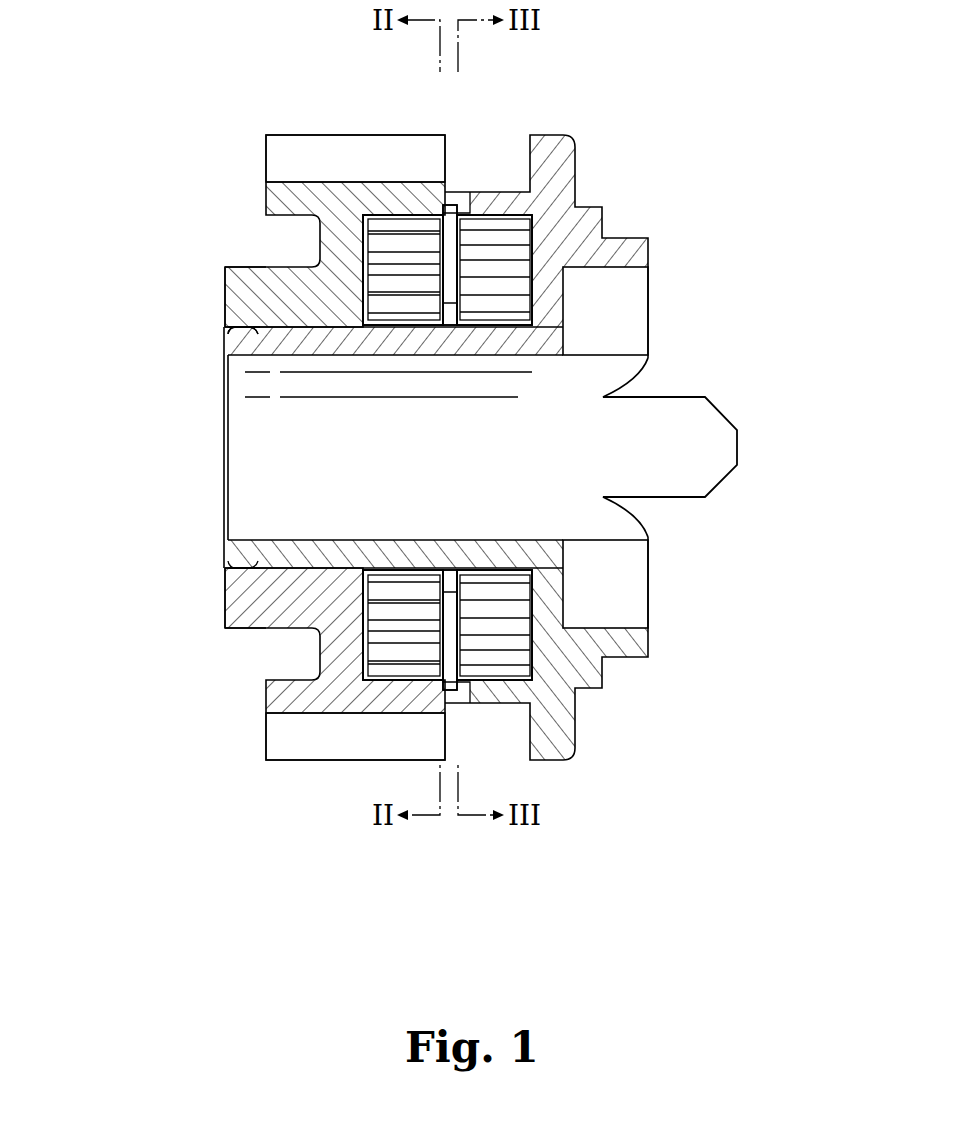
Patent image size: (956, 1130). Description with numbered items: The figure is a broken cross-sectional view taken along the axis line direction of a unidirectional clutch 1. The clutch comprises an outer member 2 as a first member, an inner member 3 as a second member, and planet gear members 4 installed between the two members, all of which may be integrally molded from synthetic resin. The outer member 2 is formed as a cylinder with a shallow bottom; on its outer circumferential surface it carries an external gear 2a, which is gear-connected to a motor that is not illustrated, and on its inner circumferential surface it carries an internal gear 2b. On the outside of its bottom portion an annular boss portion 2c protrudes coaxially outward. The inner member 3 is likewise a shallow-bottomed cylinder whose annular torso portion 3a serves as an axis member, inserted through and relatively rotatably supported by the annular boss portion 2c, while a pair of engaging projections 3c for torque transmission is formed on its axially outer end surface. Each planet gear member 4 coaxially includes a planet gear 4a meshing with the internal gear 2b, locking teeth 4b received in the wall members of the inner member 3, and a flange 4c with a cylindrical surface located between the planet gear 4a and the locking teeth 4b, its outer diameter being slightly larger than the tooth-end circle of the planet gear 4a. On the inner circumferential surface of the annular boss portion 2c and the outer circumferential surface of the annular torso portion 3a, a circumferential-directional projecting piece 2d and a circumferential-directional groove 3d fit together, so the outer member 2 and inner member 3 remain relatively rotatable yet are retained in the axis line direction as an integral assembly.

The unidirectional clutch 1 is at (443, 404).
The outer member 2 is at (300, 432).
The external gear 2a is at (295, 135).
The internal gear 2b is at (385, 238).
The annular boss portion 2c is at (232, 270).
The circumferential-directional projecting piece 2d is at (250, 341).
The inner member 3 is at (461, 447).
The annular torso portion 3a is at (245, 578).
The engaging projections 3c is at (715, 490).
The circumferential-directional groove 3d is at (258, 333).
The planet gear member 4 is at (451, 375).
The planet gear 4a is at (410, 222).
The locking teeth 4b is at (494, 392).
The flange 4c is at (450, 216).